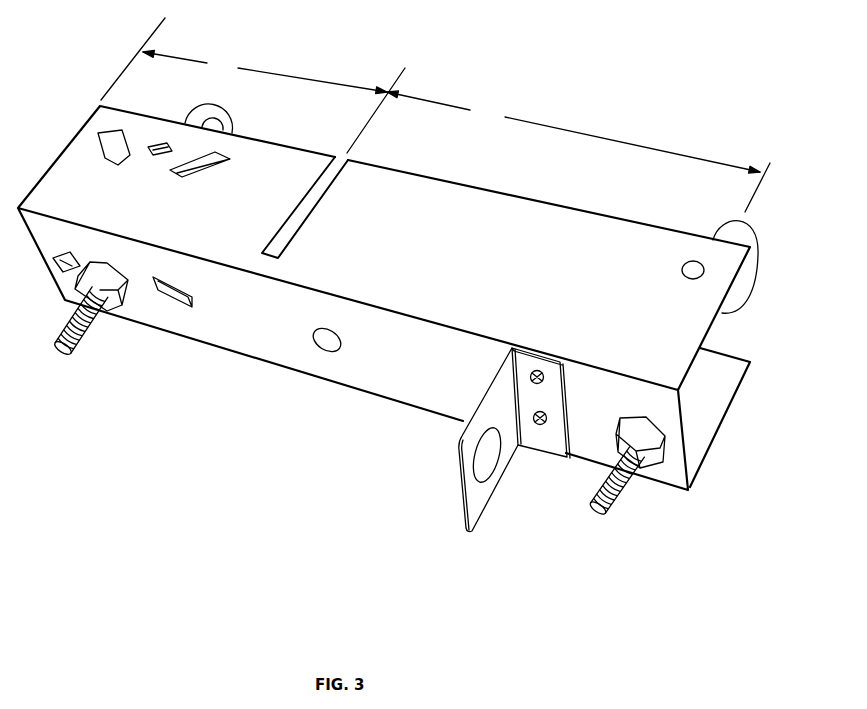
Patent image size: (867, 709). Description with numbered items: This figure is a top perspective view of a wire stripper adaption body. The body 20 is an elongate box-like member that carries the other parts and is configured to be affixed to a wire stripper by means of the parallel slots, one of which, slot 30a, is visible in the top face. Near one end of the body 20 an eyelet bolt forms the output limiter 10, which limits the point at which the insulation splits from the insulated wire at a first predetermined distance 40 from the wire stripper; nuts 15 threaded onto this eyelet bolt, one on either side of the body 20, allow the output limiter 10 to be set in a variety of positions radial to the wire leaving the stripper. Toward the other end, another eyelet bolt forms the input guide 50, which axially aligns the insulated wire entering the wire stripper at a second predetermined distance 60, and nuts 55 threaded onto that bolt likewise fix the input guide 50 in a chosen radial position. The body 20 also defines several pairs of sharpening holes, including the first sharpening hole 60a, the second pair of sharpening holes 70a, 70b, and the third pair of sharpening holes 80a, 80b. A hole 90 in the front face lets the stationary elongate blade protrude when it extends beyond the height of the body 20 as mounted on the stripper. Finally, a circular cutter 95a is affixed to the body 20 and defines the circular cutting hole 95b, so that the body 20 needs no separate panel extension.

The output limiter 10 is at (736, 225).
The nuts 15 is at (624, 426).
The body 20 is at (448, 184).
The parallel slot 30a is at (312, 194).
The first predetermined distance 40 is at (578, 151).
The input guide 50 is at (218, 111).
The nuts 55 is at (115, 305).
The second predetermined distance 60 is at (253, 85).
The first sharpening hole 60a is at (153, 129).
The second sharpening hole 70a is at (173, 172).
The second sharpening hole 70b is at (72, 261).
The third sharpening hole 80a is at (112, 150).
The third sharpening hole 80b is at (185, 294).
The hole 90 is at (316, 338).
The circular cutter 95a is at (472, 515).
The circular cutting hole 95b is at (478, 465).